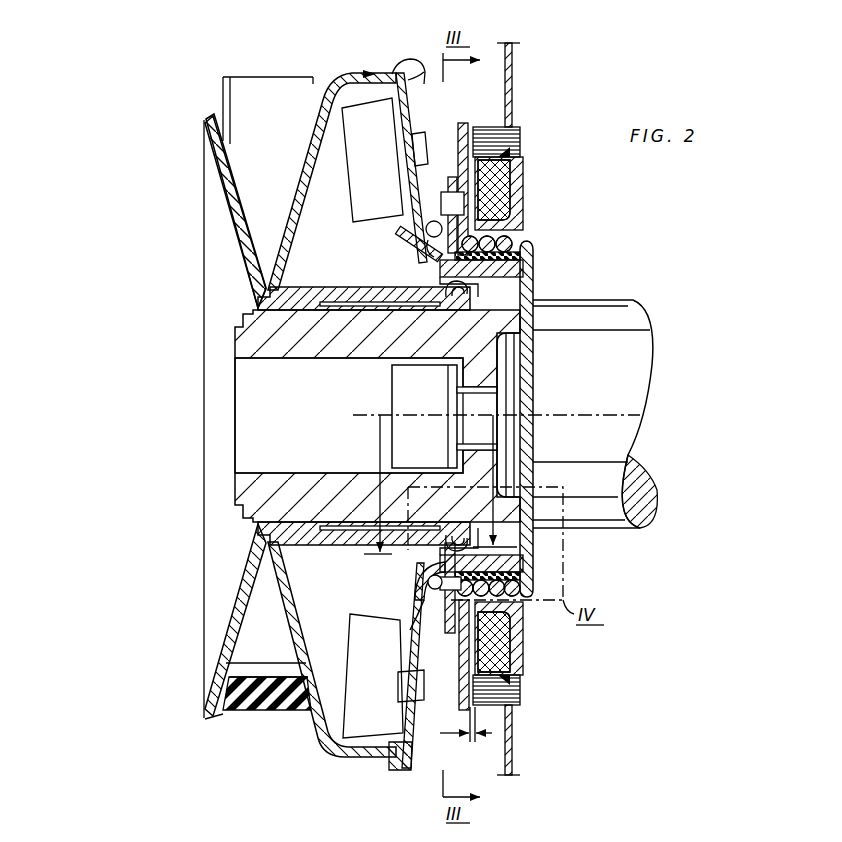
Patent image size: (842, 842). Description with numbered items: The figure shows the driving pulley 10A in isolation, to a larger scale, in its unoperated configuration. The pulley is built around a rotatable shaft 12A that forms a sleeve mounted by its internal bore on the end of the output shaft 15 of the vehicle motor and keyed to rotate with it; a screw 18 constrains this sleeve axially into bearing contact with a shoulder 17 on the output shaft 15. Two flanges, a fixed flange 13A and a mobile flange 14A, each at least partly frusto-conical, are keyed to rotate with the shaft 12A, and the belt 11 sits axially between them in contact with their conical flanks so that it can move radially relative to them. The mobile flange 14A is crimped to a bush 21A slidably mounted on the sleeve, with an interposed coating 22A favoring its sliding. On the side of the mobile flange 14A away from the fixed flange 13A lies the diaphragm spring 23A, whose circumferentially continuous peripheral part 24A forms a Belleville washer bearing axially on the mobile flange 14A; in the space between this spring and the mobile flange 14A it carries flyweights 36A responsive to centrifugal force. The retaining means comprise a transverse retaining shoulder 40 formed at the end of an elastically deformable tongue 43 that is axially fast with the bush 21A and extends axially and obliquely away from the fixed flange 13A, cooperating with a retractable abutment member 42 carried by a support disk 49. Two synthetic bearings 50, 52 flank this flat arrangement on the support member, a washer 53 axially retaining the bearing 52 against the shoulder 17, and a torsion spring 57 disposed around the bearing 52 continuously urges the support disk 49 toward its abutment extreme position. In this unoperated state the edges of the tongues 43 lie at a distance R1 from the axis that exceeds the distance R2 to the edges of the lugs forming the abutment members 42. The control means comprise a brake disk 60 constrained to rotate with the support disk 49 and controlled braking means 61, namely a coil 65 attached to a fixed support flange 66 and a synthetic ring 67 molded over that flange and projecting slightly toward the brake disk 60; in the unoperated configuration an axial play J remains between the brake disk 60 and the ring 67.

The driving pulley 10A is at (162, 614).
The belt 11 is at (266, 715).
The rotatable shaft 12A is at (230, 341).
The fixed flange 13A is at (207, 113).
The mobile flange 14A is at (336, 65).
The output shaft 15 is at (600, 418).
The shoulder 17 is at (519, 385).
The screw 18 is at (424, 394).
The bush 21A is at (332, 280).
The coating 22A is at (287, 310).
The diaphragm spring 23A is at (411, 742).
The peripheral part 24A is at (416, 96).
The flyweights 36A is at (384, 144).
The transverse retaining shoulder 40 is at (420, 560).
The retractable abutment member 42 is at (447, 603).
The elastically deformable tongue 43 is at (433, 545).
The support disk 49 is at (452, 172).
The bearing 50 is at (423, 250).
The bearing 52 is at (486, 262).
The washer 53 is at (535, 253).
The torsion spring 57 is at (517, 238).
The brake disk 60 is at (465, 120).
The controlled braking means 61 is at (530, 155).
The coil 65 is at (508, 194).
The support flange 66 is at (516, 60).
The ring 67 is at (492, 126).
The distance R1 is at (379, 441).
The distance R2 is at (495, 433).
The axial play J is at (466, 724).